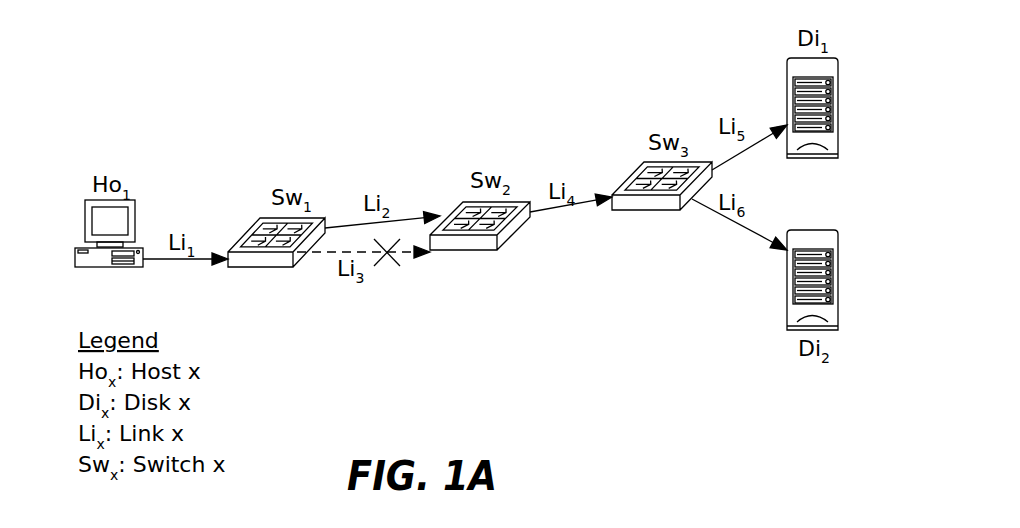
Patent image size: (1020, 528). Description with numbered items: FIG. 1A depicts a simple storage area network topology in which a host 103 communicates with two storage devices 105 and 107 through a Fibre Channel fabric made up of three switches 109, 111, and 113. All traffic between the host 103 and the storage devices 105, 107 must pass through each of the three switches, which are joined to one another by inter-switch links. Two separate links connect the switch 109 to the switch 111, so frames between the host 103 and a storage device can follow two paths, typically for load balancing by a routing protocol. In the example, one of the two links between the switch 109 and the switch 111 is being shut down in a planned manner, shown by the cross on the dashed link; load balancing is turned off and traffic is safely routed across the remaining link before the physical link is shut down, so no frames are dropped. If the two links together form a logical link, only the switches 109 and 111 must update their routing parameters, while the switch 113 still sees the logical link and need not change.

The host 103 is at (85, 216).
The storage device 105 is at (830, 56).
The storage device 107 is at (818, 230).
The switch 109 is at (299, 251).
The switch 111 is at (503, 236).
The switch 113 is at (686, 199).